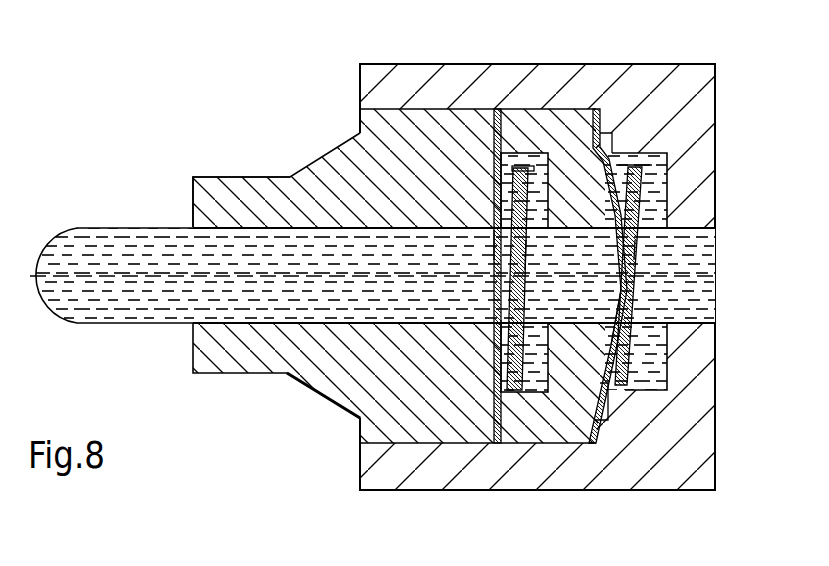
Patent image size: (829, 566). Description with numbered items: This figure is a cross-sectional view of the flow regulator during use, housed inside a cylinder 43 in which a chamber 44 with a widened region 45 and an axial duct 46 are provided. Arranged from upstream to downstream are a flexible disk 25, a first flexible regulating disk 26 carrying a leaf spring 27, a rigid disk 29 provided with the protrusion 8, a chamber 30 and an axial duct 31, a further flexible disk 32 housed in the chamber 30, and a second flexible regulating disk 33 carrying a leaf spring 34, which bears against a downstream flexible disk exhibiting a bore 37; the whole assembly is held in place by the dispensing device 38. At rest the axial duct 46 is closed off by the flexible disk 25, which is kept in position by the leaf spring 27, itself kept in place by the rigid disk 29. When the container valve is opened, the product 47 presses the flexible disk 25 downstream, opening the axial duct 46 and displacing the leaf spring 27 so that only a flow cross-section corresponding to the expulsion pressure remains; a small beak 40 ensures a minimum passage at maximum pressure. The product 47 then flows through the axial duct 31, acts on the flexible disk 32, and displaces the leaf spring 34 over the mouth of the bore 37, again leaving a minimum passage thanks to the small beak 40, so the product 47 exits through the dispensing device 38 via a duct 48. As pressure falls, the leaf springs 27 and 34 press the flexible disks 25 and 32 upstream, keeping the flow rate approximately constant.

The protrusion 8 is at (600, 378).
The flexible disk 25 is at (640, 248).
The first flexible regulating disk 26 is at (600, 110).
The leaf spring 27 is at (640, 268).
The rigid disk 29 is at (585, 445).
The chamber 30 is at (525, 165).
The axial duct 31 is at (588, 307).
The flexible disk 32 is at (527, 250).
The second flexible regulating disk 33 is at (498, 110).
The leaf spring 34 is at (508, 328).
The bore 37 is at (495, 250).
The dispensing device 38 is at (410, 77).
The small beak 40 is at (522, 153).
The cylinder 43 is at (680, 75).
The chamber 44 is at (650, 156).
The widened region 45 is at (612, 137).
The axial duct 46 is at (707, 233).
The product 47 is at (93, 243).
The duct 48 is at (263, 237).